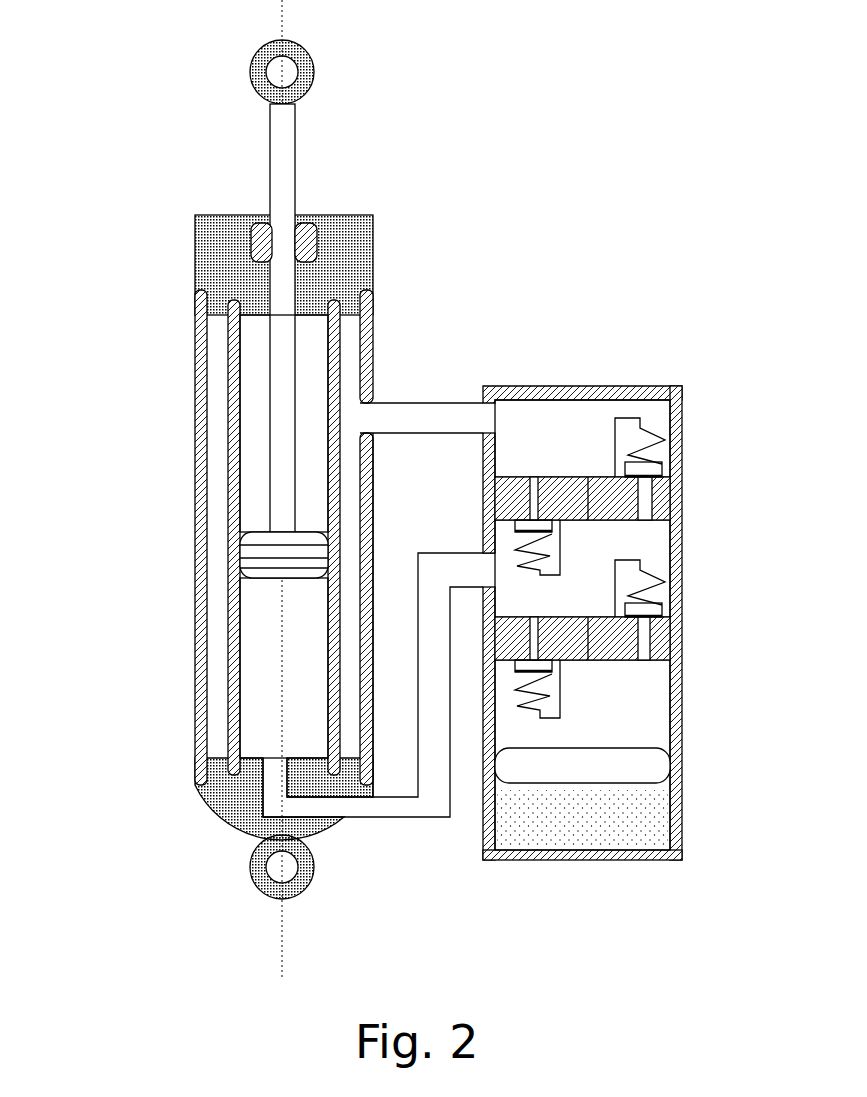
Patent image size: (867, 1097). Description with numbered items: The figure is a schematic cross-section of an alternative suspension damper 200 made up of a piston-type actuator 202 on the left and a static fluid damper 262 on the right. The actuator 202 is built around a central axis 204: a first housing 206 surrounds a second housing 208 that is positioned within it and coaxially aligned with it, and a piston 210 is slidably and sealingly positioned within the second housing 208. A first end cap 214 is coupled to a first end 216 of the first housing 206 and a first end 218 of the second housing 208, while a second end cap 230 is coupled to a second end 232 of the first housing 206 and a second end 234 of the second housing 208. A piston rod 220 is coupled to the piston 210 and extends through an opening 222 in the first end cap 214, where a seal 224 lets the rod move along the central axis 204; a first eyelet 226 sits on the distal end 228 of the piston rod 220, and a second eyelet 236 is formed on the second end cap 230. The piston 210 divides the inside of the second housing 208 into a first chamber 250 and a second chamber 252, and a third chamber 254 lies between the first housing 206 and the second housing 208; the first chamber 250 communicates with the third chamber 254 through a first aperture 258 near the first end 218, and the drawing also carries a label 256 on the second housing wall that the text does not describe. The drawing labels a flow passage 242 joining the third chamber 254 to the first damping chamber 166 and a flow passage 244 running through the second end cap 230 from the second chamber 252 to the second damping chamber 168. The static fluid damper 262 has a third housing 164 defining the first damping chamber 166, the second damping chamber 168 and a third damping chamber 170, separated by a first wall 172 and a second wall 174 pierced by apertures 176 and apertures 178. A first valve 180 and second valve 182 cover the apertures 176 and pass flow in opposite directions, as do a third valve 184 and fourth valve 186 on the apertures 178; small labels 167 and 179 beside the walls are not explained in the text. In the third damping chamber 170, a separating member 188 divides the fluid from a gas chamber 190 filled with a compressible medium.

The suspension damper 200 is at (458, 134).
The piston-type actuator 202 is at (130, 157).
The central axis 204 is at (282, 25).
The first housing 206 is at (200, 380).
The second housing 208 is at (232, 408).
The piston 210 is at (305, 580).
The first end cap 214 is at (208, 235).
The first end of the first housing 216 is at (200, 300).
The first end of the second housing 218 is at (230, 325).
The piston rod 220 is at (298, 172).
The opening 222 is at (308, 204).
The seal 224 is at (258, 230).
The first eyelet 226 is at (303, 62).
The distal end of the piston rod 228 is at (270, 124).
The second end cap 230 is at (215, 815).
The second end of the first housing 232 is at (225, 765).
The second end of the second housing 234 is at (232, 722).
The second eyelet 236 is at (262, 882).
The upper fluid passage 242 is at (422, 407).
The lower fluid passage 244 is at (430, 833).
The first chamber 250 is at (256, 495).
The second chamber 252 is at (255, 661).
The third chamber 254 is at (362, 489).
The inner tube wall 256 is at (326, 420).
The first aperture 258 is at (353, 346).
The static fluid damper 262 is at (629, 357).
The third housing 164 is at (684, 565).
The first damping chamber 166 is at (550, 408).
The first valve port 167 is at (659, 528).
The second damping chamber 168 is at (683, 522).
The third damping chamber 170 is at (663, 716).
The first wall 172 is at (680, 488).
The second wall 174 is at (682, 645).
The apertures 176 is at (585, 462).
The apertures 178 is at (612, 617).
The second valve port 179 is at (659, 676).
The first valve 180 is at (662, 452).
The second valve 182 is at (497, 540).
The third valve 184 is at (680, 612).
The fourth valve 186 is at (556, 674).
The separating member 188 is at (665, 766).
The gas chamber 190 is at (662, 822).